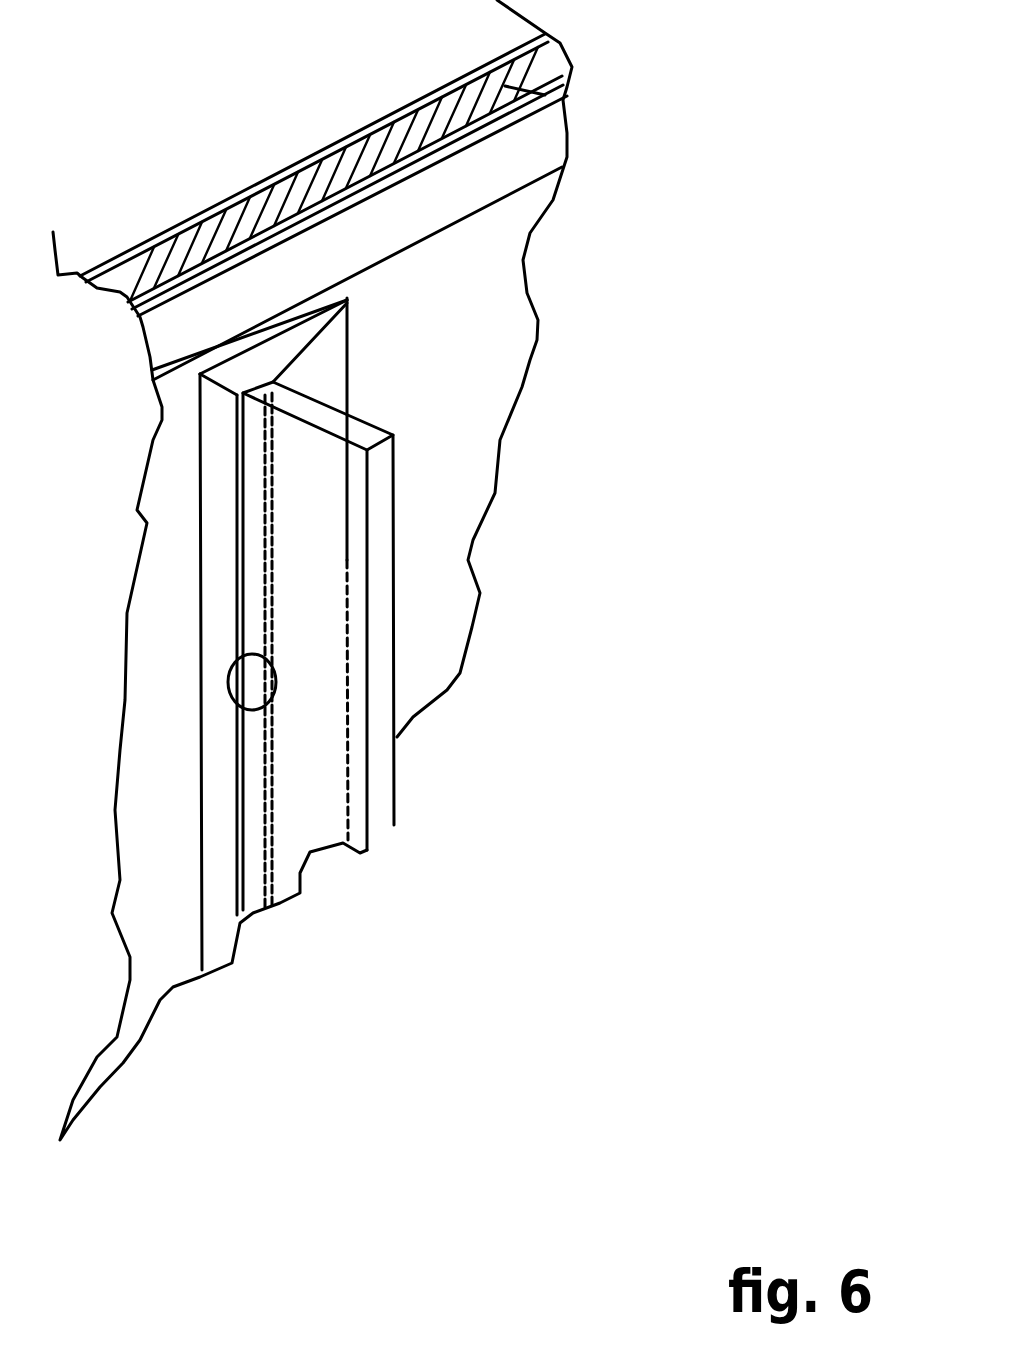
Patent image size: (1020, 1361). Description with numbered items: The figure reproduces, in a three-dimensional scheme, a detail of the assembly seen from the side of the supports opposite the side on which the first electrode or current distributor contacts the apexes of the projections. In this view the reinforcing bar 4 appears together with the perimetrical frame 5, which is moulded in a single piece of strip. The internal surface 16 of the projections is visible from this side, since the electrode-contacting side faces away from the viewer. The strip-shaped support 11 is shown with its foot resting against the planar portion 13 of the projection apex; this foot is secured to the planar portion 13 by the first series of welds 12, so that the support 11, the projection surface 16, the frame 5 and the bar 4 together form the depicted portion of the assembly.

The reinforcing bar 4 is at (553, 97).
The perimetrical frame 5 is at (527, 145).
The internal surface of projections 16 is at (323, 374).
The strip-shaped support 11 is at (377, 553).
The first series of welds 12 is at (272, 683).
The planar portion 13 is at (237, 815).